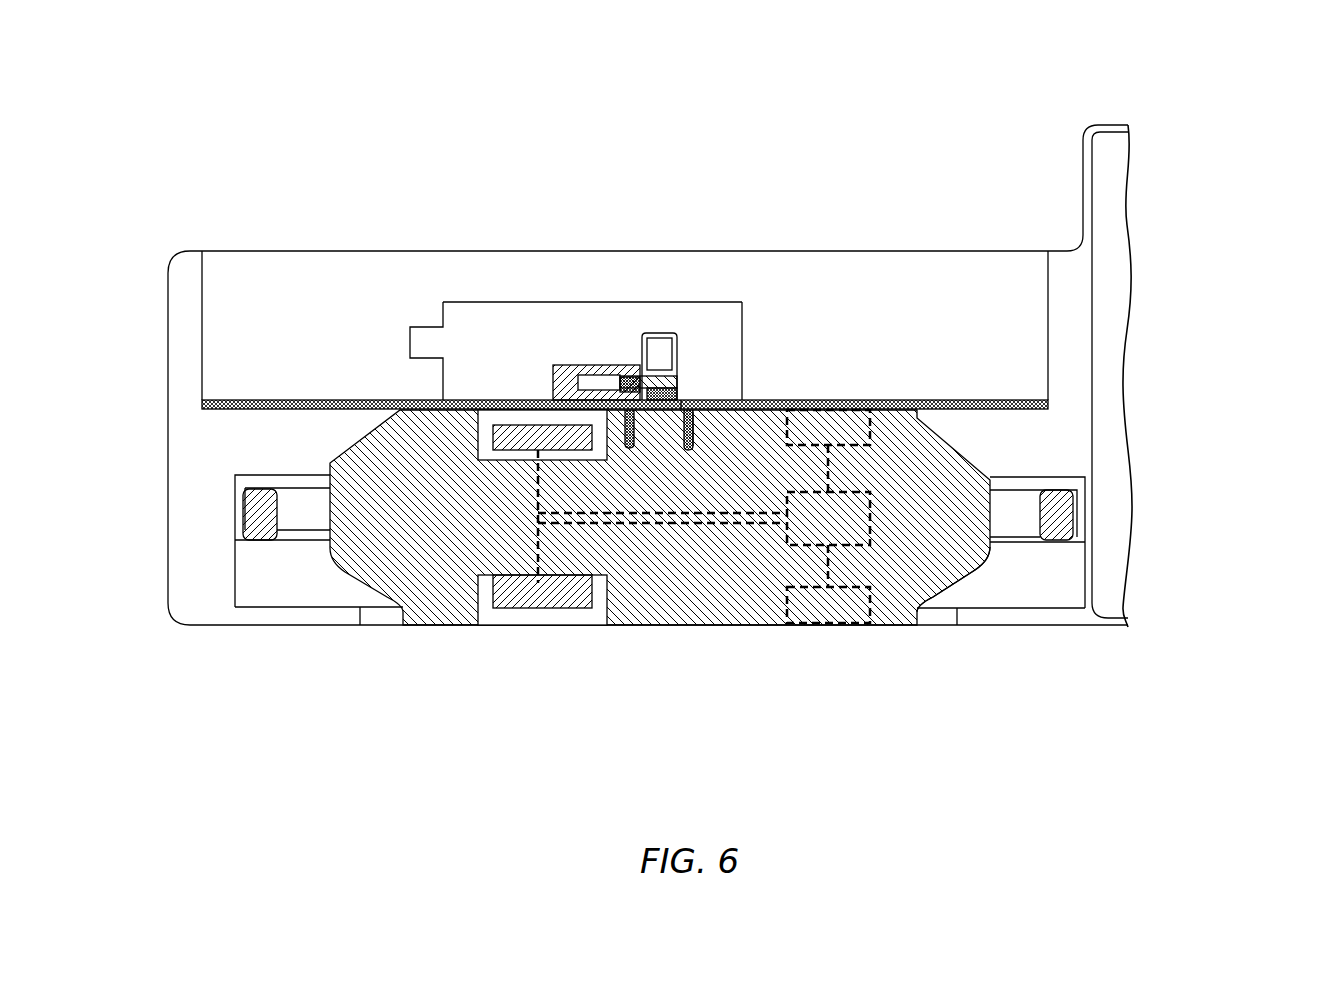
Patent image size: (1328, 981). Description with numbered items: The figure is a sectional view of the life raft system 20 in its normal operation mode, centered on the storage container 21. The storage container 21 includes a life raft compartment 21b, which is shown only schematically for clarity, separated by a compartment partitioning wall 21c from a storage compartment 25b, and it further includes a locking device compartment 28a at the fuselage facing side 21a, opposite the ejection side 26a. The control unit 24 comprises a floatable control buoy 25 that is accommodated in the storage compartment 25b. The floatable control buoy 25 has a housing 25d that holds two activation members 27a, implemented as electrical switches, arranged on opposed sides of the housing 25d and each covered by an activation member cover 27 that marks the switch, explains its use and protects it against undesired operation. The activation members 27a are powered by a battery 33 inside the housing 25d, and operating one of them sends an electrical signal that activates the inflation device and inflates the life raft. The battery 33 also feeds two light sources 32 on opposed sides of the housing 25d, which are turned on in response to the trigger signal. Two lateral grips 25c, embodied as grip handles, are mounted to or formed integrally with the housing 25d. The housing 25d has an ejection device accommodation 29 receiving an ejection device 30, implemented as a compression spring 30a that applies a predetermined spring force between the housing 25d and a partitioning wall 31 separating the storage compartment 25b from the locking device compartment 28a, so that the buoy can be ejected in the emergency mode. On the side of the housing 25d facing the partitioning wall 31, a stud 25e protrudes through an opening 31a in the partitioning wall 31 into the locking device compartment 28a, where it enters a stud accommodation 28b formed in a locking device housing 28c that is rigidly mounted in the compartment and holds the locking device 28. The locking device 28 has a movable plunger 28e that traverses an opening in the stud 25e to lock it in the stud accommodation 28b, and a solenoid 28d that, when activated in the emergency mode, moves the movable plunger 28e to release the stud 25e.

The life raft system 20 is at (1214, 178).
The storage container 21 is at (1086, 168).
The fuselage facing side 21a is at (1117, 123).
The life raft compartment 21b is at (1110, 280).
The compartment partitioning wall 21c is at (1087, 578).
The control unit 24 is at (848, 655).
The floatable control buoy 25 is at (760, 600).
The storage compartment 25b is at (288, 584).
The lateral grips 25c is at (262, 513).
The housing 25d is at (933, 597).
The stud 25e is at (673, 377).
The ejection side 26a is at (1069, 628).
The activation member cover 27 is at (485, 410).
The activation members 27a is at (503, 448).
The locking device 28 is at (452, 295).
The locking device compartment 28a is at (992, 295).
The stud accommodation 28b is at (657, 345).
The locking device housing 28c is at (697, 302).
The solenoid 28d is at (556, 380).
The movable plunger 28e is at (620, 378).
The ejection device accommodation 29 is at (700, 437).
The ejection device 30 is at (688, 456).
The compression spring 30a is at (632, 450).
The partitioning wall 31 is at (1027, 410).
The opening 31a is at (690, 403).
The light sources 32 is at (878, 423).
The battery 33 is at (870, 517).